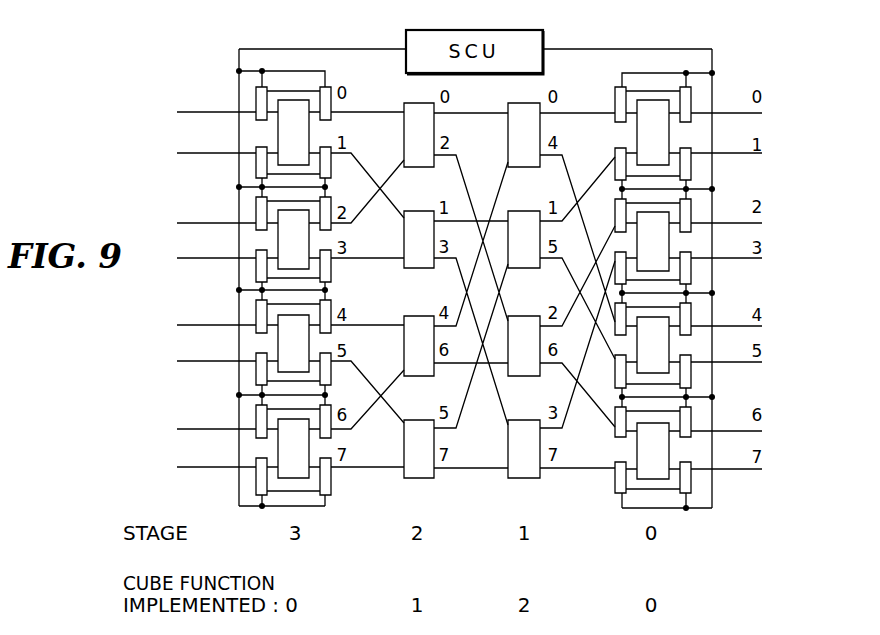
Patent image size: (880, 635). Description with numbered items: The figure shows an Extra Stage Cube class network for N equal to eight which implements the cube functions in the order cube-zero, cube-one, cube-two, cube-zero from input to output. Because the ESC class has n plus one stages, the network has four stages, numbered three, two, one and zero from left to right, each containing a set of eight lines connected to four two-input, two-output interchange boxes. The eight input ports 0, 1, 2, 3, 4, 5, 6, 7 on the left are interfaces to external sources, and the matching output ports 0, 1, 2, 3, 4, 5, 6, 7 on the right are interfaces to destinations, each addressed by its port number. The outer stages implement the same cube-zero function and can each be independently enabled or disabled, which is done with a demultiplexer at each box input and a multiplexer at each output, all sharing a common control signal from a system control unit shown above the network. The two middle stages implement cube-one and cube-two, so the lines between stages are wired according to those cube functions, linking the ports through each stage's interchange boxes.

The port 0 is at (216, 97).
The port 1 is at (216, 143).
The port 2 is at (216, 213).
The port 3 is at (216, 248).
The port 4 is at (216, 315).
The port 5 is at (216, 351).
The port 6 is at (216, 417).
The port 7 is at (216, 456).